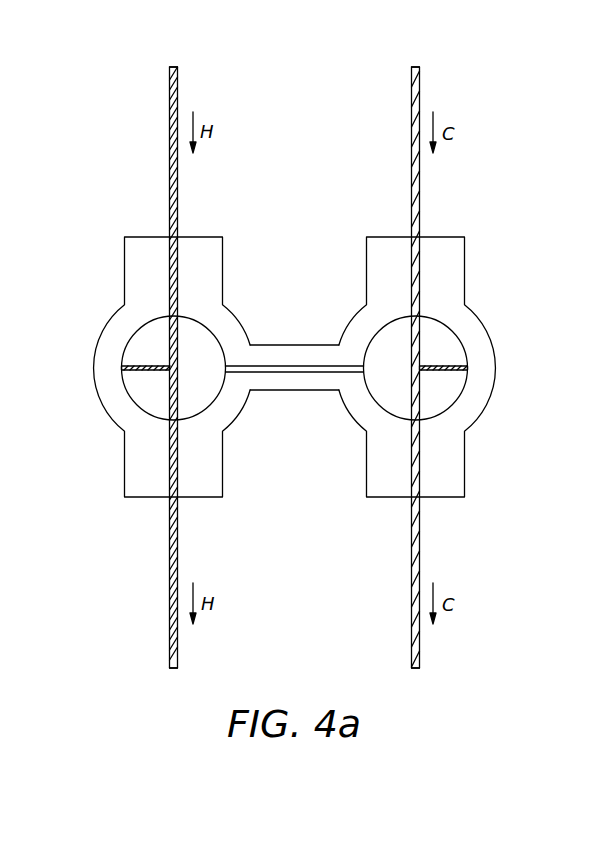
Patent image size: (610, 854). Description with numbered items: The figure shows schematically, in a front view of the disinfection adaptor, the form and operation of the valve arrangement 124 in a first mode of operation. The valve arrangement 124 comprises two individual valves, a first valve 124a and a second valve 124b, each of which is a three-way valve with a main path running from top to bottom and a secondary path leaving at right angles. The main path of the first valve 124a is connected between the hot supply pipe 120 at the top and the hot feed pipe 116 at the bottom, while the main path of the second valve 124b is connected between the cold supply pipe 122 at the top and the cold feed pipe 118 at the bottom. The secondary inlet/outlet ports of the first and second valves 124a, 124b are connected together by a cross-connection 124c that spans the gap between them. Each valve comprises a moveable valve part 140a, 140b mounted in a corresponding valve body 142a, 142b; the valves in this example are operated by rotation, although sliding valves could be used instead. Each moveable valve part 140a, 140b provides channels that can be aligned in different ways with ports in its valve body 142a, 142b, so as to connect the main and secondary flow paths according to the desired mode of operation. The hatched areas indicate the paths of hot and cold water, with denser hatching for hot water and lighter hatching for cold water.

The valve arrangement 124 is at (146, 104).
The first valve 124a is at (112, 250).
The second valve 124b is at (480, 250).
The cross-connection 124c is at (290, 345).
The valve body 142a is at (107, 322).
The valve body 142b is at (482, 322).
The moveable valve part 140a is at (127, 393).
The moveable valve part 140b is at (462, 393).
The hot supply pipe 120 is at (156, 62).
The cold supply pipe 122 is at (397, 62).
The hot feed pipe 116 is at (156, 692).
The cold feed pipe 118 is at (397, 694).